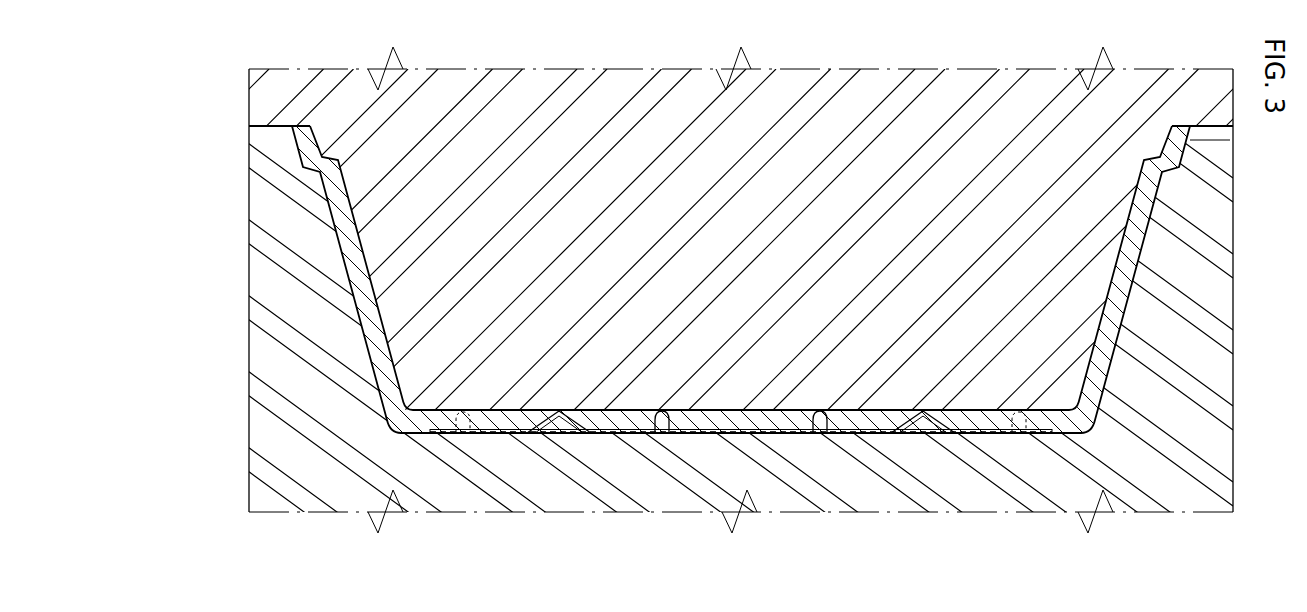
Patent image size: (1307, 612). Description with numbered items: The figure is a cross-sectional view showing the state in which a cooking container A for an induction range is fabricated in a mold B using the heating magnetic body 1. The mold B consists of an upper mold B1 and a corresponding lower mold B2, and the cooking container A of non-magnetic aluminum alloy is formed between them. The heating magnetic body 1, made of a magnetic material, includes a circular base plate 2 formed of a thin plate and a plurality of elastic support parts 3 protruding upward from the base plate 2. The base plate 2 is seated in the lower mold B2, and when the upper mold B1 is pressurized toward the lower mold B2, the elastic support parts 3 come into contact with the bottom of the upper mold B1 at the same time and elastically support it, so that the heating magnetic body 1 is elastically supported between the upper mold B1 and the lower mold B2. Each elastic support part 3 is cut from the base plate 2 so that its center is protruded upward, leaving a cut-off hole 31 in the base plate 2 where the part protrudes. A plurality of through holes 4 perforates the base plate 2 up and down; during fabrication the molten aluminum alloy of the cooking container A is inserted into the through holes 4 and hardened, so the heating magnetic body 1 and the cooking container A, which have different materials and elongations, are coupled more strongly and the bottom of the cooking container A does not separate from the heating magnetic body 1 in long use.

The heating magnetic body 1 is at (463, 441).
The base plate 2 is at (641, 433).
The elastic support part 3 is at (559, 411).
The cut-off hole 31 is at (558, 433).
The through hole 4 is at (733, 433).
The cooking container A is at (378, 318).
The mold B is at (160, 100).
The upper mold B1 is at (280, 100).
The lower mold B2 is at (280, 232).